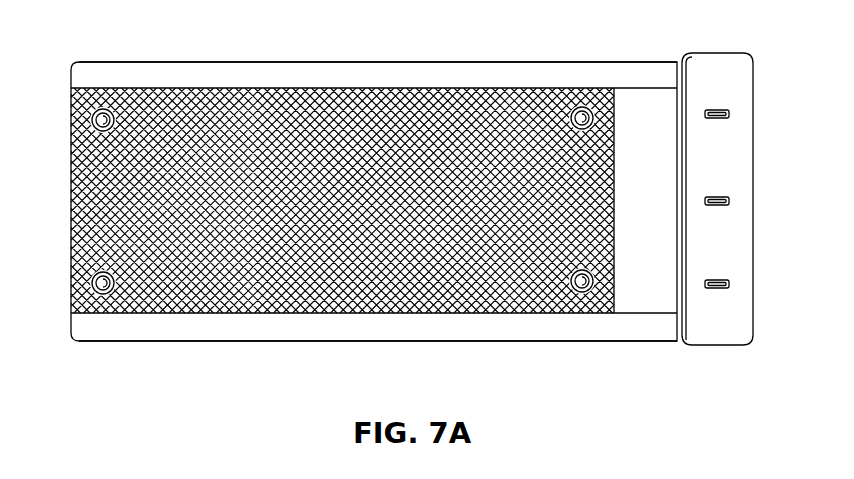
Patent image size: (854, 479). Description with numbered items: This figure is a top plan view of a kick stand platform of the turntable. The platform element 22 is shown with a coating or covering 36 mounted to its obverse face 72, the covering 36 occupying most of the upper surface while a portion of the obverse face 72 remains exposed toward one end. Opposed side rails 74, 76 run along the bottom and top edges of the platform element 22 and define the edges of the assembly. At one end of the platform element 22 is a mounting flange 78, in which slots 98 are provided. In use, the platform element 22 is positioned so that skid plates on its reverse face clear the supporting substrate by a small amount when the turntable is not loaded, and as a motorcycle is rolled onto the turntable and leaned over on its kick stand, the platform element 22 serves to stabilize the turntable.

The platform element 22 is at (372, 342).
The coating or covering 36 is at (95, 230).
The obverse face 72 is at (647, 98).
The side rail 74 is at (131, 332).
The side rail 76 is at (213, 70).
The mounting flange 78 is at (742, 172).
The slots 98 is at (730, 282).